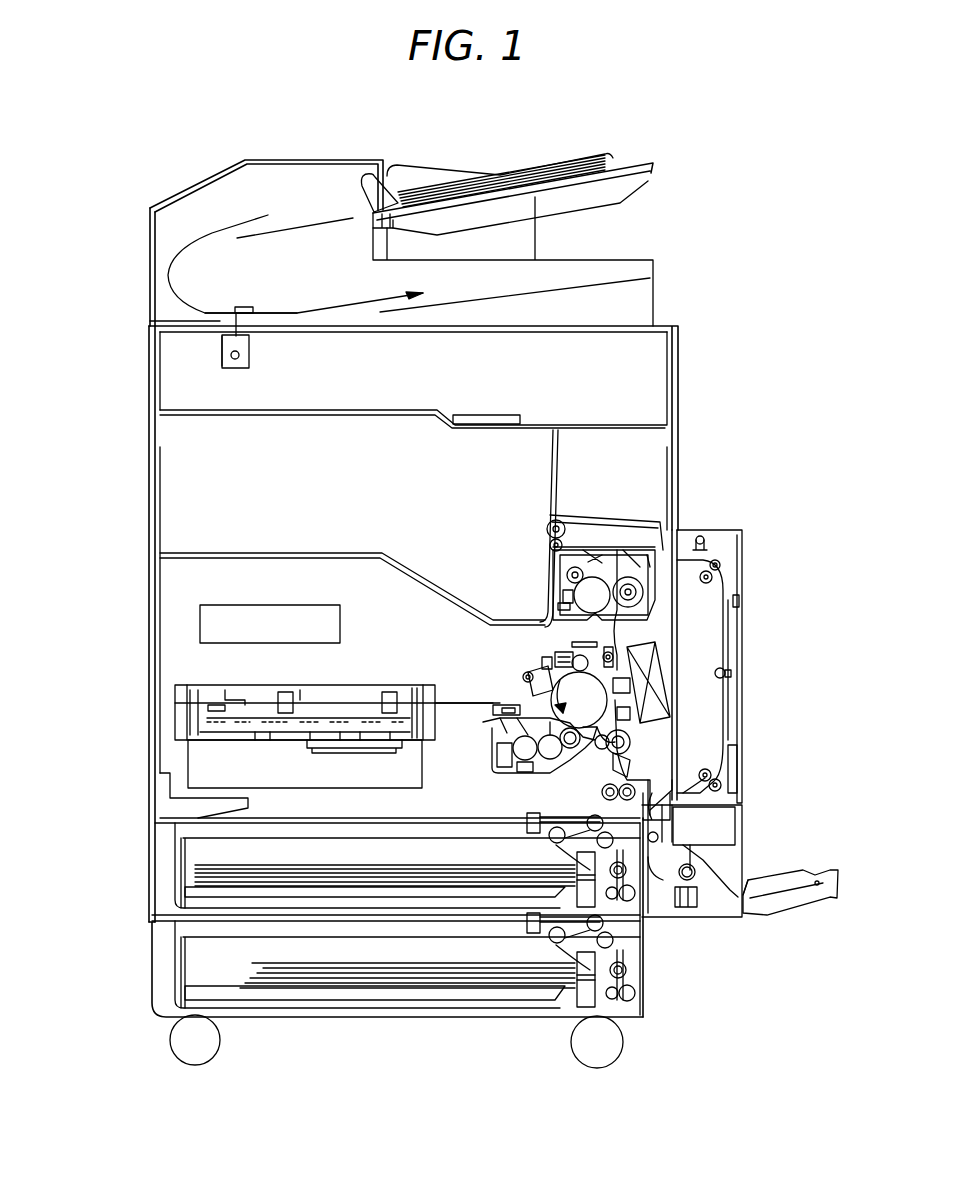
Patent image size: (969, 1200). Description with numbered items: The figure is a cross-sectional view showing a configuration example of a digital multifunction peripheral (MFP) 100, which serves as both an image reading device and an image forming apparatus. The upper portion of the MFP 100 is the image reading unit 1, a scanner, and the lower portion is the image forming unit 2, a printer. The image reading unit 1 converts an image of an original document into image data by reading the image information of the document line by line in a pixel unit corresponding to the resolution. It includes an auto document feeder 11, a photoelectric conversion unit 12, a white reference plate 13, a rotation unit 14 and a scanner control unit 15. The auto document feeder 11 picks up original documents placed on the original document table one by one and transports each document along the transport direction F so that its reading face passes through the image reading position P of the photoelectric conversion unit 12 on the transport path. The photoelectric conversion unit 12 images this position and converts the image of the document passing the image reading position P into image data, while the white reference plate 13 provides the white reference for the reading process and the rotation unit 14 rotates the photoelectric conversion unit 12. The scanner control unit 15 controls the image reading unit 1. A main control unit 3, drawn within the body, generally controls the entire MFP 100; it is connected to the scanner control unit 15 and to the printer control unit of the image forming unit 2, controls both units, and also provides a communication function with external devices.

The digital multifunction peripheral 100 is at (108, 176).
The image reading unit 1 is at (840, 155).
The image forming unit 2 is at (840, 548).
The main control unit 3 is at (283, 612).
The auto document feeder 11 is at (334, 177).
The photoelectric conversion unit 12 is at (222, 348).
The white reference plate 13 is at (243, 306).
The rotation unit 14 is at (249, 355).
The scanner control unit 15 is at (498, 415).
The transport direction F is at (210, 233).
The image reading position P is at (235, 312).